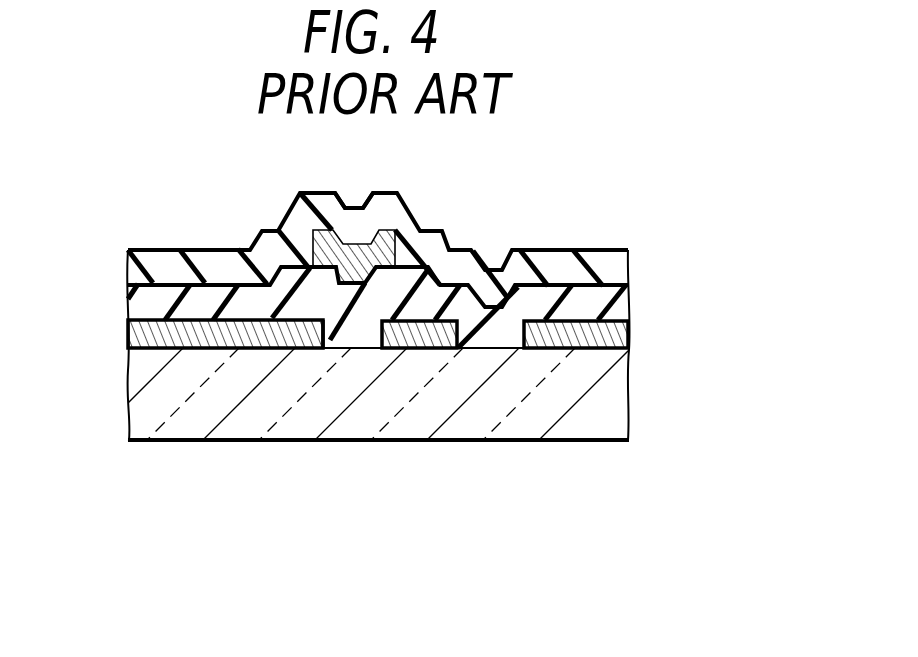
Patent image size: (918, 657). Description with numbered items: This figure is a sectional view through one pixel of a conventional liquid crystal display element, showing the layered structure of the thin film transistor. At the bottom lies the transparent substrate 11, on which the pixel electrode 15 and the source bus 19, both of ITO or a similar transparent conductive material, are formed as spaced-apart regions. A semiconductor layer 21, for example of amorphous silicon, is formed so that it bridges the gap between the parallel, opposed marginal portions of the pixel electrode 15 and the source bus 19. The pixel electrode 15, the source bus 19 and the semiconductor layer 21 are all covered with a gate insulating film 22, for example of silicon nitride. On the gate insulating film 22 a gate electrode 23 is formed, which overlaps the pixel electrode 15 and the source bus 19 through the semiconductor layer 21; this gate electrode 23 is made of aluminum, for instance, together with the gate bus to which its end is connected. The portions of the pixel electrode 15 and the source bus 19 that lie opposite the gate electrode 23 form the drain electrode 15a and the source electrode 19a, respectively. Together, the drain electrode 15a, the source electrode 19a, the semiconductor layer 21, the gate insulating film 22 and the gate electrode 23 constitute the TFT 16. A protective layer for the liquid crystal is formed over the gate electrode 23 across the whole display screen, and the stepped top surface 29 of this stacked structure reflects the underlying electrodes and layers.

The transparent substrate 11 is at (531, 433).
The pixel electrode 15 is at (128, 321).
The drain electrode 15a is at (310, 340).
The TFT 16 is at (274, 208).
The source bus 19 is at (448, 350).
The source electrode 19a is at (393, 350).
The semiconductor layer 21 is at (285, 266).
The gate insulating film 22 is at (426, 283).
The gate electrode 23 is at (392, 238).
The surface step of insulating layer 29 is at (365, 193).